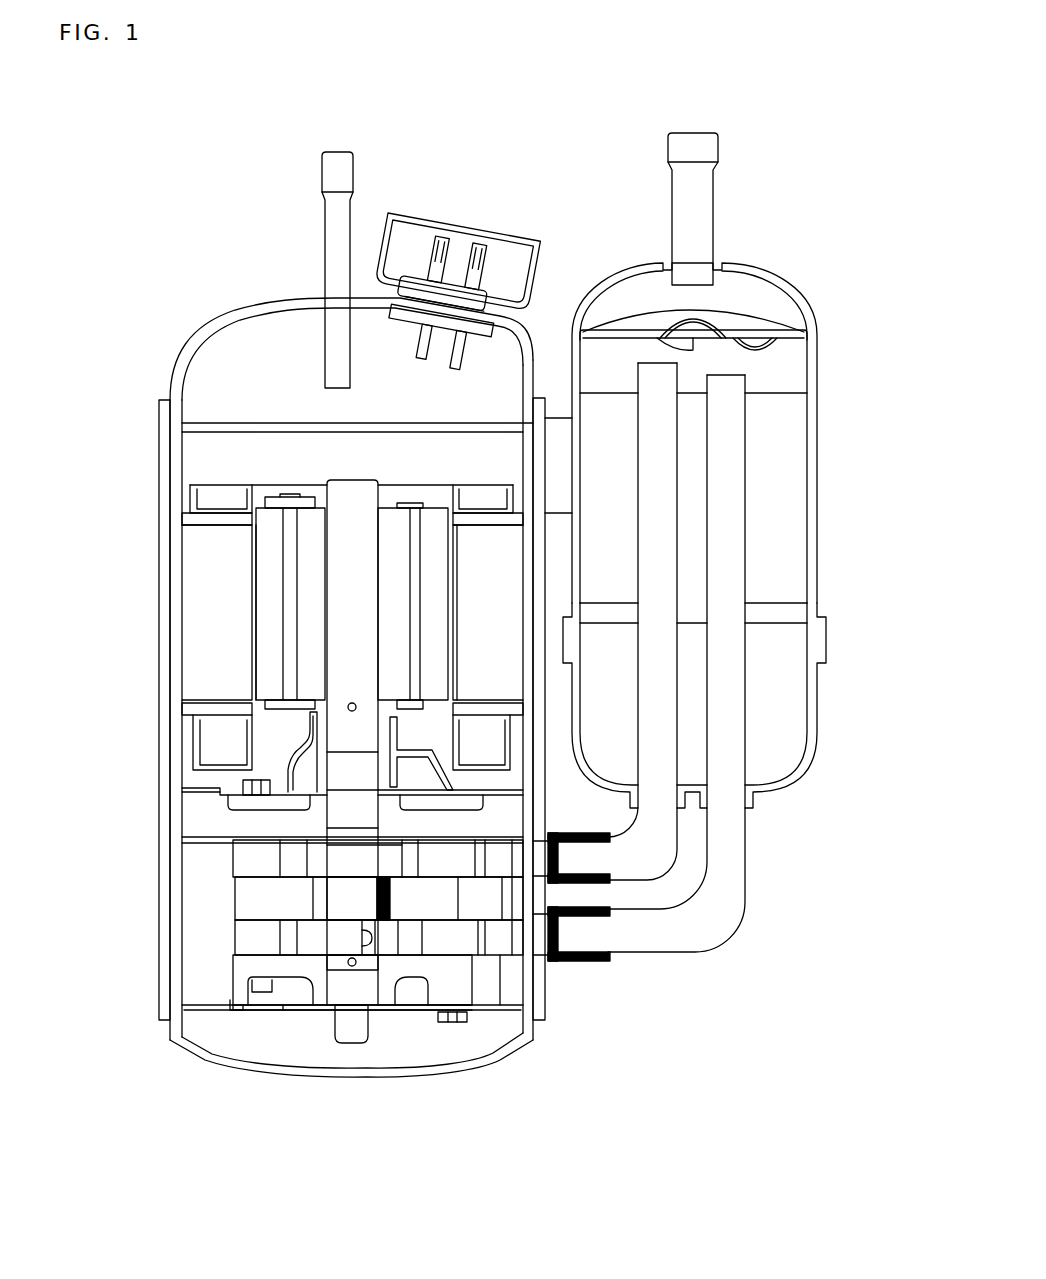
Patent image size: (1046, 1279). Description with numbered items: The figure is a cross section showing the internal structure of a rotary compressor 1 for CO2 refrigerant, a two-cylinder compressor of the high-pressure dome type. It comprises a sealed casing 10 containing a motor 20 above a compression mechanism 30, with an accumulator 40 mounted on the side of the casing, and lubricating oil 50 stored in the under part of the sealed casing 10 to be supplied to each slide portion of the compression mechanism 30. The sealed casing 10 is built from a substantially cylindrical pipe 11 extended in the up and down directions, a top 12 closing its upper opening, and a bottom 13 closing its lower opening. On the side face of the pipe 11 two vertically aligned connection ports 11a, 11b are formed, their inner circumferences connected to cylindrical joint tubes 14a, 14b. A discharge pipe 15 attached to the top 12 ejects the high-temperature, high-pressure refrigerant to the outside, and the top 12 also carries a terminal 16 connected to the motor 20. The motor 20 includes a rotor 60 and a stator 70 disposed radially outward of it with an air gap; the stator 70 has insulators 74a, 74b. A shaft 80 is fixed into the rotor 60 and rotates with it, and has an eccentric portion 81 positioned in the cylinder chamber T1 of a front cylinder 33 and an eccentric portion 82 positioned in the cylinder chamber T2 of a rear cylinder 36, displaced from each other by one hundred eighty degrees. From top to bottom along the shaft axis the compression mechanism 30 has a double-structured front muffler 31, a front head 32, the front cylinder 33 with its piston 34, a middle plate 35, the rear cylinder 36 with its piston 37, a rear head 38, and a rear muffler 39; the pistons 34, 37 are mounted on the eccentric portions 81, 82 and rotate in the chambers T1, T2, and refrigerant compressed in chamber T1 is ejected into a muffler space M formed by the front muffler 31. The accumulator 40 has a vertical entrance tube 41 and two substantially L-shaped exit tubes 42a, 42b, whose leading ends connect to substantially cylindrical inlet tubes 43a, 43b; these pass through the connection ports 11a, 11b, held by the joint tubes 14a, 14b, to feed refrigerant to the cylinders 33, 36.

The rotary compressor 1 is at (393, 146).
The sealed casing 10 is at (190, 330).
The pipe 11 is at (166, 462).
The connection port 11a is at (570, 852).
The connection port 11b is at (570, 962).
The top 12 is at (270, 305).
The bottom 13 is at (263, 1062).
The joint tube 14a is at (582, 895).
The joint tube 14b is at (594, 932).
The discharge pipe 15 is at (322, 170).
The terminal 16 is at (460, 225).
The motor 20 is at (190, 466).
The compression mechanism 30 is at (200, 914).
The front muffler 31 is at (272, 756).
The front head 32 is at (196, 815).
The front cylinder 33 is at (246, 858).
The piston 34 is at (270, 898).
The middle plate 35 is at (248, 938).
The rear cylinder 36 is at (245, 942).
The piston 37 is at (236, 998).
The rear head 38 is at (230, 996).
The rear muffler 39 is at (293, 1036).
The accumulator 40 is at (746, 236).
The entrance tube 41 is at (672, 208).
The exit tube 42a is at (657, 862).
The exit tube 42b is at (746, 858).
The inlet tube 43a is at (755, 792).
The inlet tube 43b is at (483, 950).
The lubricating oil 50 is at (237, 1046).
The rotor 60 is at (272, 570).
The stator 70 is at (200, 604).
The insulator 74a is at (190, 498).
The insulator 74b is at (190, 740).
The shaft 80 is at (350, 655).
The eccentric portion 81 is at (533, 964).
The eccentric portion 82 is at (367, 862).
The muffler space M is at (262, 722).
The cylinder chamber T1 is at (295, 870).
The cylinder chamber T2 is at (415, 944).